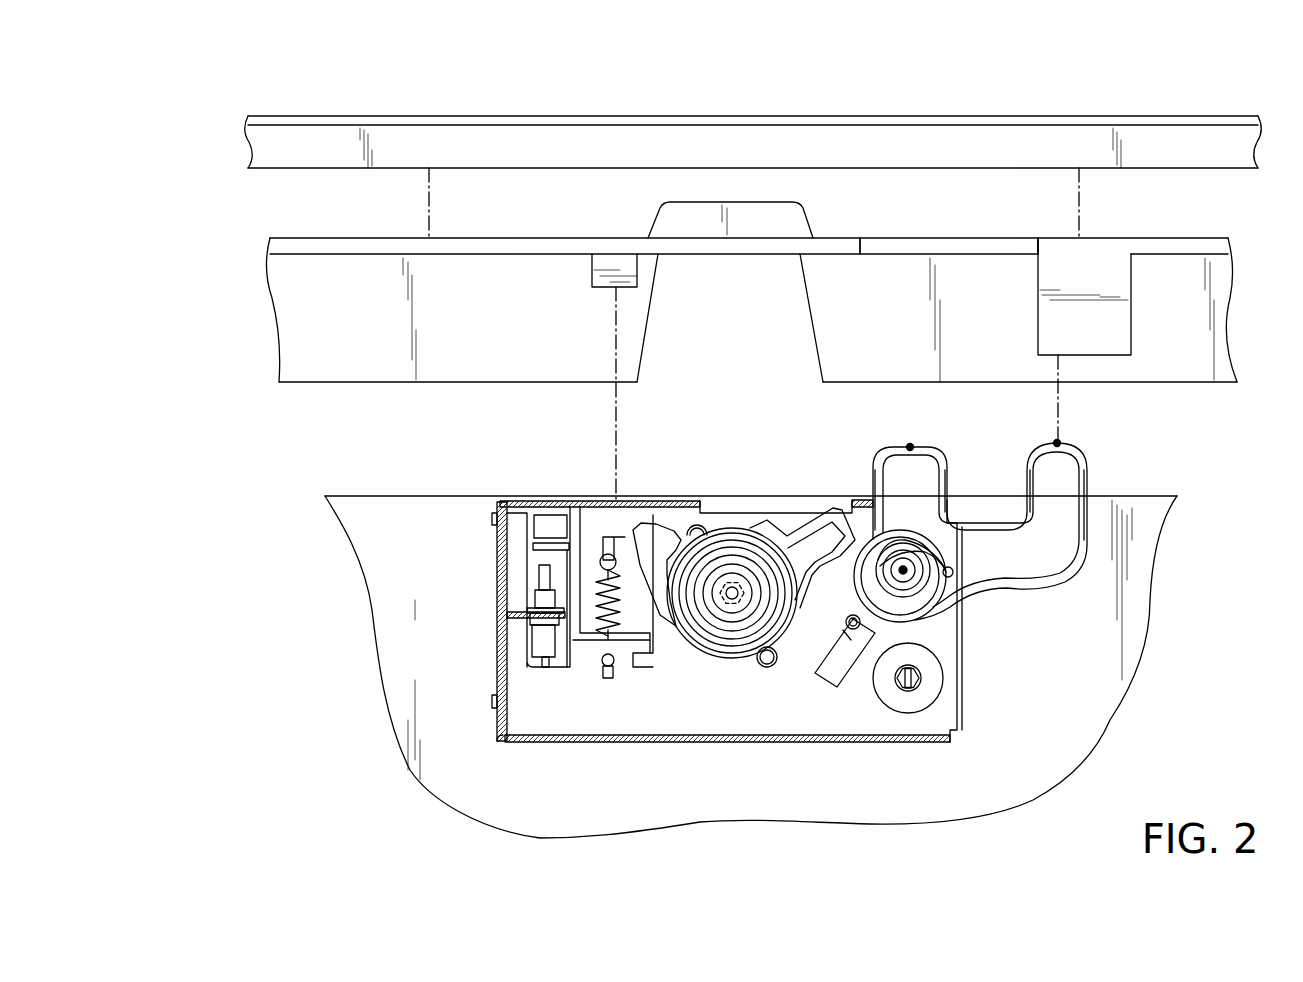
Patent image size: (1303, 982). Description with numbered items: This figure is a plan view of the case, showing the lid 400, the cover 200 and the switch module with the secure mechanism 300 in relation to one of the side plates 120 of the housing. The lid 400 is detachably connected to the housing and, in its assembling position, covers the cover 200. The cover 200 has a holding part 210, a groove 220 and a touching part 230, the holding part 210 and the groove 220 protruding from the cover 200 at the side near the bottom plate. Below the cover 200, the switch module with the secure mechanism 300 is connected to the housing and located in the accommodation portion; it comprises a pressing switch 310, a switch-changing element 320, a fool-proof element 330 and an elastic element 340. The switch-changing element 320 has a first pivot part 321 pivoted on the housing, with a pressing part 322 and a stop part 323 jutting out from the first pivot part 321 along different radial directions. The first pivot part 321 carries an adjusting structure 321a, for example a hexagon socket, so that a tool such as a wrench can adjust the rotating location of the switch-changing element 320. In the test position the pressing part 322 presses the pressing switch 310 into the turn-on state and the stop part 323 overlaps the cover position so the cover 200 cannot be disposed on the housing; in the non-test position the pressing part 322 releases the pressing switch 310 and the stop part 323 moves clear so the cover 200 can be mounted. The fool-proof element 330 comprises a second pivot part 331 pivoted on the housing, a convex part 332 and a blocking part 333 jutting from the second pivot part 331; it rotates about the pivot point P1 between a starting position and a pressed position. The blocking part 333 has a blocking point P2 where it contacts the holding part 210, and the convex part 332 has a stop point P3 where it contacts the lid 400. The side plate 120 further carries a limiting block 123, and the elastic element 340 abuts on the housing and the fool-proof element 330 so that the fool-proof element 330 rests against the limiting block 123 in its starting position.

The lid 400 is at (1150, 106).
The cover 200 is at (240, 310).
The holding part 210 is at (1068, 313).
The groove 220 is at (934, 246).
The touching part 230 is at (613, 262).
The side plate 120 is at (425, 606).
The limiting block 123 is at (866, 504).
The switch module with secure mechanism 300 is at (485, 757).
The pressing switch 310 is at (558, 684).
The switch-changing element 320 is at (761, 615).
The first pivot part 321 is at (731, 560).
The adjusting structure 321a is at (735, 601).
The pressing part 322 is at (648, 540).
The stop part 323 is at (833, 533).
The fool-proof element 330 is at (1022, 608).
The second pivot part 331 is at (922, 562).
The convex part 332 is at (908, 470).
The blocking part 333 is at (1058, 470).
The elastic element 340 is at (853, 573).
The pivot point P1 is at (906, 576).
The blocking point P2 is at (910, 447).
The stop point P3 is at (1057, 443).